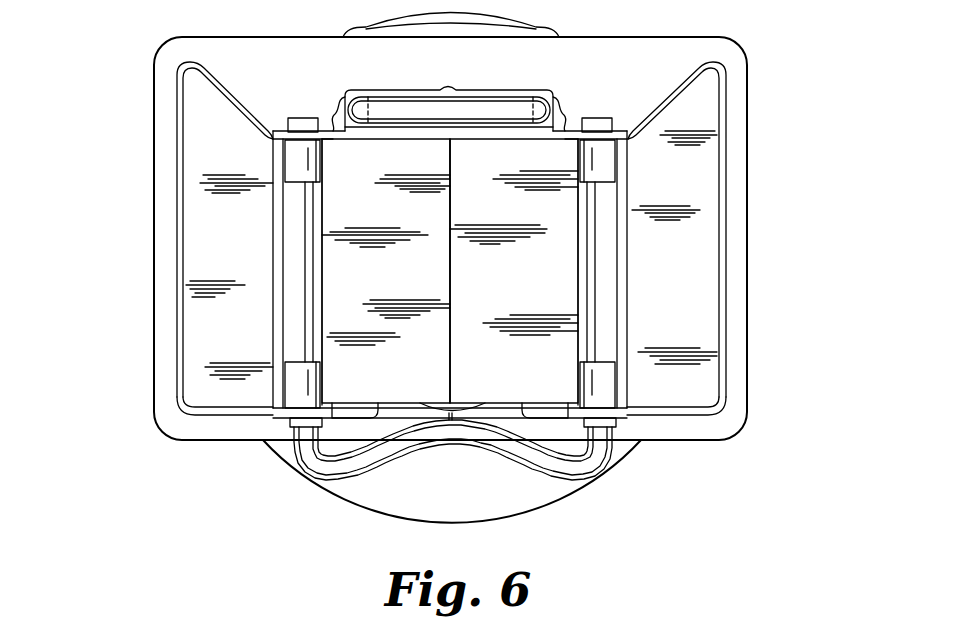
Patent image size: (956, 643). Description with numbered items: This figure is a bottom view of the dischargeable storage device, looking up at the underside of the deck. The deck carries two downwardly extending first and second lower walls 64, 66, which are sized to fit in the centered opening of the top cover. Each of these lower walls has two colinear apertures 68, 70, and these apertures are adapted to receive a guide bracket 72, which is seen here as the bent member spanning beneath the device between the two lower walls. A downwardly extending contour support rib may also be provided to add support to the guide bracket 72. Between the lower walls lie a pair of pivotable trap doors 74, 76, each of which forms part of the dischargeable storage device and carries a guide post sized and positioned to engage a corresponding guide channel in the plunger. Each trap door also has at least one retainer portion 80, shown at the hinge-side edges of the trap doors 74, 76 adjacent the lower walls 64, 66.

The first lower wall 64 is at (230, 375).
The second lower wall 66 is at (630, 373).
The aperture 68 is at (292, 447).
The aperture 70 is at (240, 105).
The guide bracket 72 is at (575, 462).
The trap door 74 is at (369, 283).
The trap door 76 is at (507, 283).
The retainer portion 80 is at (297, 163).